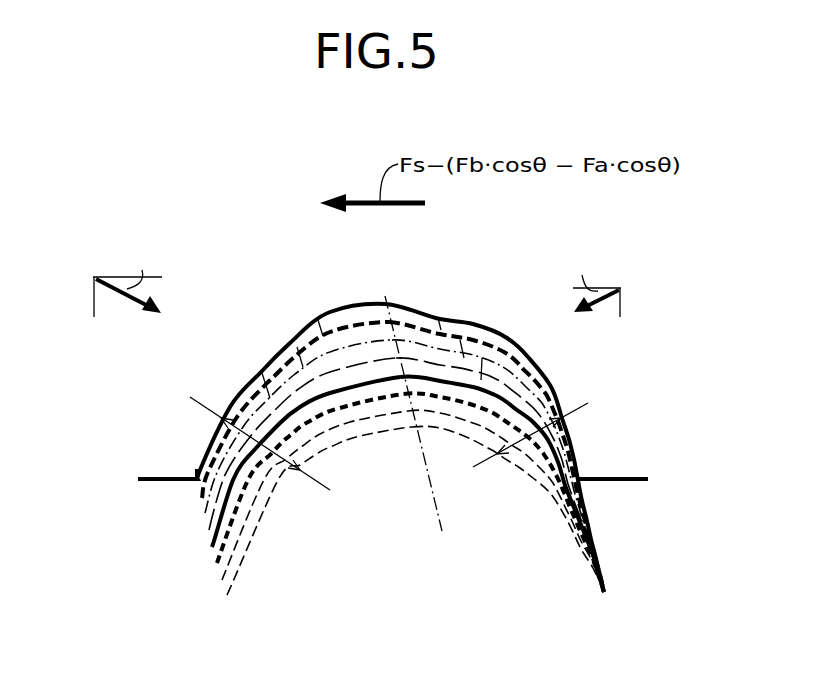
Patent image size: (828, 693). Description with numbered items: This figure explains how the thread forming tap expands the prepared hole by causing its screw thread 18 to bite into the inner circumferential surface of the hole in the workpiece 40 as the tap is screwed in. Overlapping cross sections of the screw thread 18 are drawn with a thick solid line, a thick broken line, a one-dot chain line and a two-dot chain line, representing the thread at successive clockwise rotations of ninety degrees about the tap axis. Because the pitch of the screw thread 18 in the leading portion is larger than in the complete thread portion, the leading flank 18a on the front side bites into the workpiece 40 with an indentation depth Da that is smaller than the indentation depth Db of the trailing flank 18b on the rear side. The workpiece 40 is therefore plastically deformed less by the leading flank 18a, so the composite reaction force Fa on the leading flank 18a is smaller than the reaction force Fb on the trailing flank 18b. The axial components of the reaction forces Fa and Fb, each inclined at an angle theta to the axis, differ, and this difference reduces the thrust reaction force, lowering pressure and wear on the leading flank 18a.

The screw thread 18 is at (390, 458).
The leading flank 18a is at (408, 306).
The trailing flank 18b is at (352, 309).
The workpiece 40 is at (641, 466).
The indentation depth Da is at (589, 404).
The indentation depth Db is at (190, 397).
The reaction force Fa is at (613, 295).
The reaction force Fb is at (128, 298).